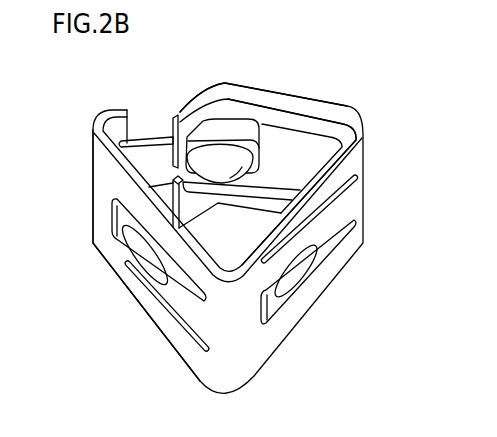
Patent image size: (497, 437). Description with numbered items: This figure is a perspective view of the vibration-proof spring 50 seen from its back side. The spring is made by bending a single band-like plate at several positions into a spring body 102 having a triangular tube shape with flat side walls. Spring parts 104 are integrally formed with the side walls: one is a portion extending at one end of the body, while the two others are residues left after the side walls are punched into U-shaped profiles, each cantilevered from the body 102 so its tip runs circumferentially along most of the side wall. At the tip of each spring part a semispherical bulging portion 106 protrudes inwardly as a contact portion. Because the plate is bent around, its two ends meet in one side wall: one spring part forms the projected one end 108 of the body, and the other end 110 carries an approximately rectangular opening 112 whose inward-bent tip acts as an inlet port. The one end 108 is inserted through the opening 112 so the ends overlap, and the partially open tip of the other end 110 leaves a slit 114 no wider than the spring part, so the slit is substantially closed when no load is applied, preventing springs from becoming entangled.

The vibration-proof spring 50 is at (333, 87).
The spring body 102 is at (97, 176).
The spring part 104 is at (153, 152).
The semispherical bulging portion 106 is at (228, 155).
The one end 108 is at (255, 139).
The other end 110 is at (228, 95).
The opening 112 is at (317, 137).
The slit 114 is at (170, 160).